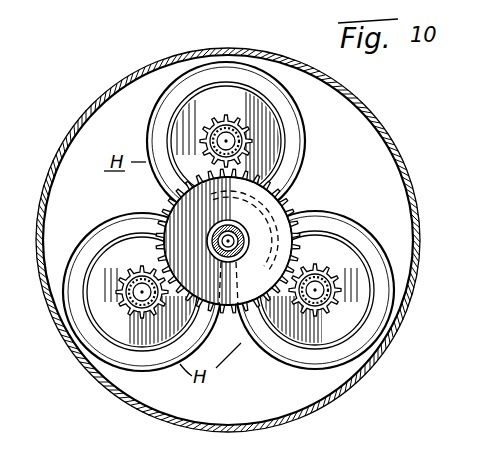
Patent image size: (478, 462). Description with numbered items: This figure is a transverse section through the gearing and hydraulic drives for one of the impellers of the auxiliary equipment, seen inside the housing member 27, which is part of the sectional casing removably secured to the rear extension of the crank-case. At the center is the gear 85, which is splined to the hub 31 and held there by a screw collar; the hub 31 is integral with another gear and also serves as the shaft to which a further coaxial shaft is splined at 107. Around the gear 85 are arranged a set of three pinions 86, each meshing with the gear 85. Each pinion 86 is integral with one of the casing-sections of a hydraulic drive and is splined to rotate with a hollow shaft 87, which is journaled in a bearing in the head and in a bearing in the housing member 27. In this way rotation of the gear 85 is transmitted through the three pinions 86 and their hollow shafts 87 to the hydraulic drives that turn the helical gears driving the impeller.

The housing member 27 is at (301, 421).
The hub 31 is at (241, 243).
The gear 85 is at (291, 210).
The pinion 86 is at (250, 131).
The hollow shaft 87 is at (246, 128).
The spline 107 is at (230, 262).